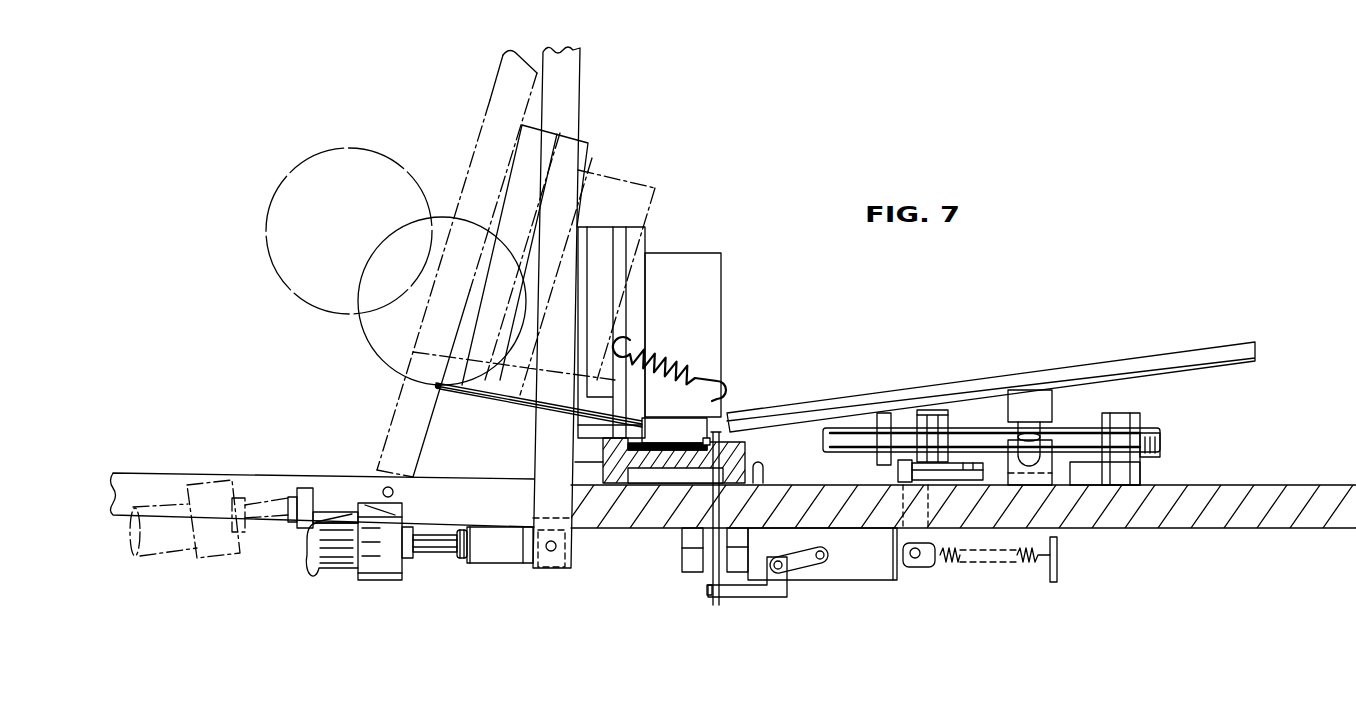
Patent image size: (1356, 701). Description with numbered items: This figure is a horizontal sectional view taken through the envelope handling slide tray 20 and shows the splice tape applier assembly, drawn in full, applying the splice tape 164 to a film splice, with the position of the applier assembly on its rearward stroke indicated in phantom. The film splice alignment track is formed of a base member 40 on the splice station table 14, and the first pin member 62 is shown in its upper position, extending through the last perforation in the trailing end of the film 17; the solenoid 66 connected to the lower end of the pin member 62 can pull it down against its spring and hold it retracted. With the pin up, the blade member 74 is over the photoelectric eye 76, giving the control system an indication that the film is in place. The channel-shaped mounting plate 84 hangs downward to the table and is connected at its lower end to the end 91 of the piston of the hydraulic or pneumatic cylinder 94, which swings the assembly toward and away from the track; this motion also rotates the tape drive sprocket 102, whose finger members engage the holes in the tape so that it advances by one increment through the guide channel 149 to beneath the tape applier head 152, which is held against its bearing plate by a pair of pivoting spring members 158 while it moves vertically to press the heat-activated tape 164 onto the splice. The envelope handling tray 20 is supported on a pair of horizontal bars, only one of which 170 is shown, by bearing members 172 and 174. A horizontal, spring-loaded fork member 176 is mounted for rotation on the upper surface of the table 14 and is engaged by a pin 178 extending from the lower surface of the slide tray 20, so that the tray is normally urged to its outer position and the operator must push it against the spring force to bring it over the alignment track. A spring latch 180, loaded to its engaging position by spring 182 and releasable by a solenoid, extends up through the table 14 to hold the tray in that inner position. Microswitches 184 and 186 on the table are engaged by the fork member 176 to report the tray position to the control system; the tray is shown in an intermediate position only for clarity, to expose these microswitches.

The splice station table 14 is at (1265, 497).
The film 17 is at (614, 456).
The envelope handling slide tray 20 is at (1118, 364).
The base member 40 is at (645, 468).
The first pin member 62 is at (707, 578).
The solenoid 66 is at (843, 567).
The blade member 74 is at (682, 563).
The photocell arrangement 76 is at (687, 562).
The mounting plate 84 is at (565, 88).
The piston end 91 is at (505, 555).
The cylinder 94 is at (383, 582).
The tape drive sprocket 102 is at (416, 339).
The guide channel 149 is at (480, 395).
The tape applier head 152 is at (702, 294).
The spring members 158 is at (672, 348).
The splice tape increment 164 is at (655, 446).
The horizontal bar 170 is at (1160, 441).
The bearing member 172 is at (880, 455).
The bearing member 174 is at (1053, 465).
The fork member 176 is at (1050, 475).
The pin 178 is at (1027, 390).
The spring latch 180 is at (933, 560).
The spring 182 is at (1020, 566).
The microswitch 184 is at (945, 440).
The microswitch 186 is at (1142, 472).